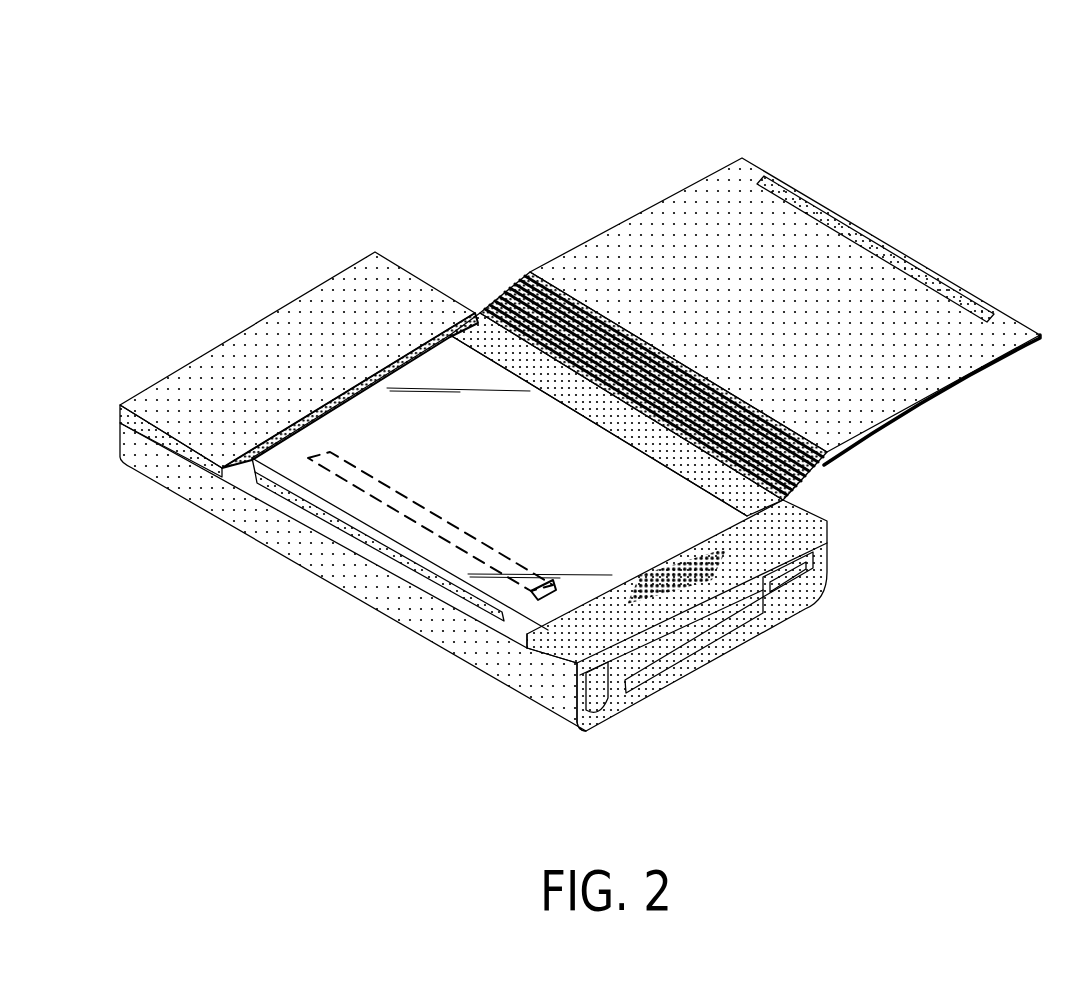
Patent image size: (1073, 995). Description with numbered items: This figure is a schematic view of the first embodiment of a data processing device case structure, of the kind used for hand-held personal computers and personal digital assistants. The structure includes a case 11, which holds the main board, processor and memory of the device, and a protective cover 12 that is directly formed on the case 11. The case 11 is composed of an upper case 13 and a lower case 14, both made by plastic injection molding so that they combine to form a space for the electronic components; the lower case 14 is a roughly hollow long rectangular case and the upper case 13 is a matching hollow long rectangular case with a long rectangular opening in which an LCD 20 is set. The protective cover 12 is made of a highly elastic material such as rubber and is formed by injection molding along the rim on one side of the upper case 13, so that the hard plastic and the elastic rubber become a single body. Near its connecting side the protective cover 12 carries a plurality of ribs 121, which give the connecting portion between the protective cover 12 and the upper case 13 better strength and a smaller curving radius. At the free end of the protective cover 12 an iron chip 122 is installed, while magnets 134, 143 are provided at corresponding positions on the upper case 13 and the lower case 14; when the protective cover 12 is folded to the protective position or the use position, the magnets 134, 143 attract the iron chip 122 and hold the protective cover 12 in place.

The case 11 is at (231, 278).
The protective cover 12 is at (785, 311).
The ribs 121 is at (823, 463).
The iron chip 122 is at (880, 240).
The upper case 13 is at (172, 403).
The lower case 14 is at (160, 457).
The magnet 134 is at (318, 512).
The magnet 143 is at (533, 590).
The LCD 20 is at (463, 512).